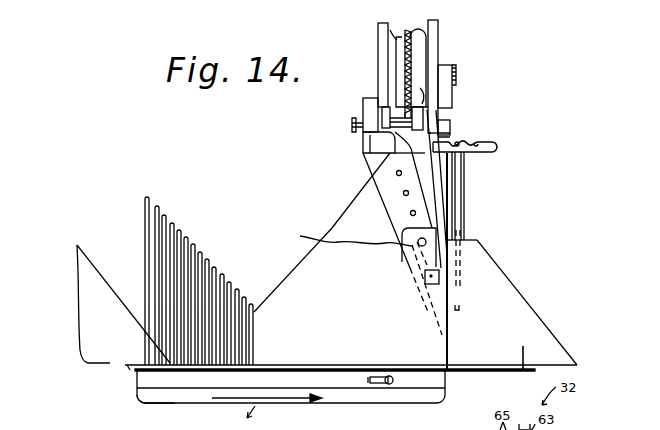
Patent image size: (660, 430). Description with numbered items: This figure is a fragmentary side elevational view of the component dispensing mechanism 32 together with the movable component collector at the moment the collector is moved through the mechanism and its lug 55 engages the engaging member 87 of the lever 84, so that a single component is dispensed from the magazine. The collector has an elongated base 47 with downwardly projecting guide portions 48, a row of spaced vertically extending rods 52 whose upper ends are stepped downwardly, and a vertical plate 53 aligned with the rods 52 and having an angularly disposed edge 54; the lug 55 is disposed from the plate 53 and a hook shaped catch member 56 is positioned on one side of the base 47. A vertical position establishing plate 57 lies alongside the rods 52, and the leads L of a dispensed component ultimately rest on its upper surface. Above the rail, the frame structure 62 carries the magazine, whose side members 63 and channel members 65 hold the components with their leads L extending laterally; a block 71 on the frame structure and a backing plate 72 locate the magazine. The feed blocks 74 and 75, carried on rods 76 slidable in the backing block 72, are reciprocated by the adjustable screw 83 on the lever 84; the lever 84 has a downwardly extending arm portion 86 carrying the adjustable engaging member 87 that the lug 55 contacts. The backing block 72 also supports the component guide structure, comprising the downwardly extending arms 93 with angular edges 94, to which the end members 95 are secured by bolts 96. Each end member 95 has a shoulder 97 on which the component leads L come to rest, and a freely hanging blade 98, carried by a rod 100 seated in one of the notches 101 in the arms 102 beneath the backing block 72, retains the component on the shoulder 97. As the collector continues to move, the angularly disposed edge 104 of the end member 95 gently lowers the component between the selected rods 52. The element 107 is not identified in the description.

The component dispensing mechanism 32 is at (373, 23).
The elongated base 47 is at (198, 389).
The guide portions 48 is at (157, 403).
The rods 52 is at (223, 270).
The plates 53 is at (332, 303).
The angular edges 54 is at (346, 236).
The lug 55 is at (426, 285).
The hook shaped catch member 56 is at (379, 383).
The vertical position establishing plates 57 is at (523, 348).
The frame structure 62 is at (456, 78).
The side members 63 is at (378, 44).
The channel members 65 is at (423, 43).
The block 71 is at (446, 96).
The backing plate 72 is at (363, 120).
The feed block 74 is at (423, 102).
The feed block 75 is at (373, 104).
The rods 76 is at (364, 135).
The adjustable screw 83 is at (449, 120).
The lever 84 is at (441, 135).
The arm portion 86 is at (447, 255).
The engaging member 87 is at (443, 288).
The arms 93 is at (392, 203).
The angular edges 94 is at (435, 206).
The end members 95 is at (106, 362).
The bolts 96 is at (420, 247).
The shoulder 97 is at (470, 241).
The blade 98 is at (462, 166).
The rod 100 is at (460, 141).
The notches 101 is at (483, 141).
The arms 102 is at (492, 147).
The angularly disposed edges 104 is at (114, 290).
The conveyor 107 is at (306, 400).
The leads L is at (413, 58).